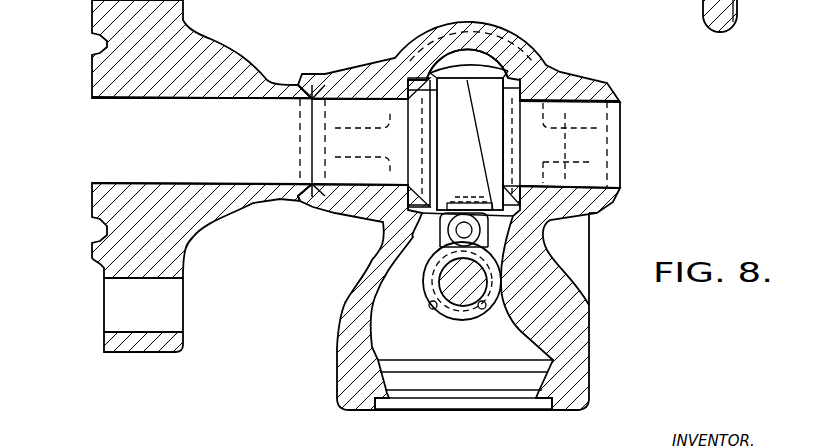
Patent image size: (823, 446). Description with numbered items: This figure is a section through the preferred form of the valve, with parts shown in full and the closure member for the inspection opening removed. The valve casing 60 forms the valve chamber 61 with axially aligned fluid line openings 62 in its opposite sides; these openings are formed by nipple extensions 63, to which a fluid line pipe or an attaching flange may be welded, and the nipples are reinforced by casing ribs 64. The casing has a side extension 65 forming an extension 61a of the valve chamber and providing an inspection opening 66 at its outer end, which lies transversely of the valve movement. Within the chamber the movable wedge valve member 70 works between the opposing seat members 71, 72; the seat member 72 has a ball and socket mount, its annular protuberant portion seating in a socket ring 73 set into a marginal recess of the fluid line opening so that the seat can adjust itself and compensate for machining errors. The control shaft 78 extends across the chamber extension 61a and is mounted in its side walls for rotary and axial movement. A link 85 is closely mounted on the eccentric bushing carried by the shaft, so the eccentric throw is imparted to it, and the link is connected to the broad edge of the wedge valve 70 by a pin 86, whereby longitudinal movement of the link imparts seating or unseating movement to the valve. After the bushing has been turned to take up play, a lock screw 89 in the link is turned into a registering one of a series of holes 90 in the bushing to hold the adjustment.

The valve casing 60 is at (512, 34).
The valve chamber 61 is at (463, 70).
The valve chamber extension 61a is at (492, 274).
The fluid line openings 62 is at (466, 143).
The nipple extensions 63 is at (587, 85).
The casing ribs 64 is at (342, 234).
The side extension 65 is at (557, 285).
The inspection opening 66 is at (460, 393).
The wedge valve member 70 is at (470, 144).
The seat member 71 is at (487, 92).
The seat member 72 is at (433, 132).
The socket ring 73 is at (397, 73).
The control shaft 78 is at (428, 305).
The link 85 is at (493, 295).
The pin 86 is at (458, 230).
The lock screw 89 is at (432, 312).
The holes 90 is at (428, 262).